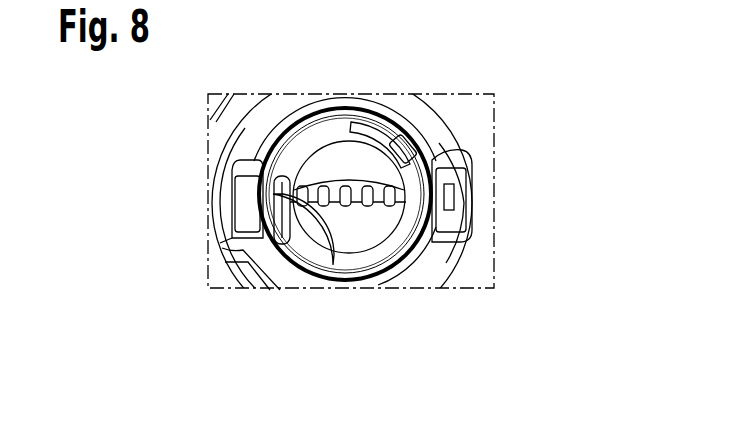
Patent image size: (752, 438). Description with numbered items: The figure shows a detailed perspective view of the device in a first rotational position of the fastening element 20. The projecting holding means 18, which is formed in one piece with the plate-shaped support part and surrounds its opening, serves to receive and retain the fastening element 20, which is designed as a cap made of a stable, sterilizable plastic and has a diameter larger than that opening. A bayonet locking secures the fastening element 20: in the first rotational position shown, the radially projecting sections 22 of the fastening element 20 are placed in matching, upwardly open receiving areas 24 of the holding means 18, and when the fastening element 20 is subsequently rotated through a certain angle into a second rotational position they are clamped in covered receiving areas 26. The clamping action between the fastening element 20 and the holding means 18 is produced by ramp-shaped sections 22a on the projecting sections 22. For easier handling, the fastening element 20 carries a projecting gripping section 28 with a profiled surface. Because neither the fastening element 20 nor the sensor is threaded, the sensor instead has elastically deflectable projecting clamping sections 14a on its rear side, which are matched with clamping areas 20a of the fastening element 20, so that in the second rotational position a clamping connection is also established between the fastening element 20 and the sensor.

The holding means 18 is at (462, 268).
The fastening element 20 is at (294, 122).
The clamping area 20a is at (372, 140).
The radially projecting section 22 is at (447, 220).
The ramp-shaped section 22a is at (447, 192).
The upwardly open receiving area 24 is at (240, 170).
The covered receiving area 26 is at (249, 145).
The gripping section 28 is at (333, 176).
The clamping section 14a is at (288, 208).